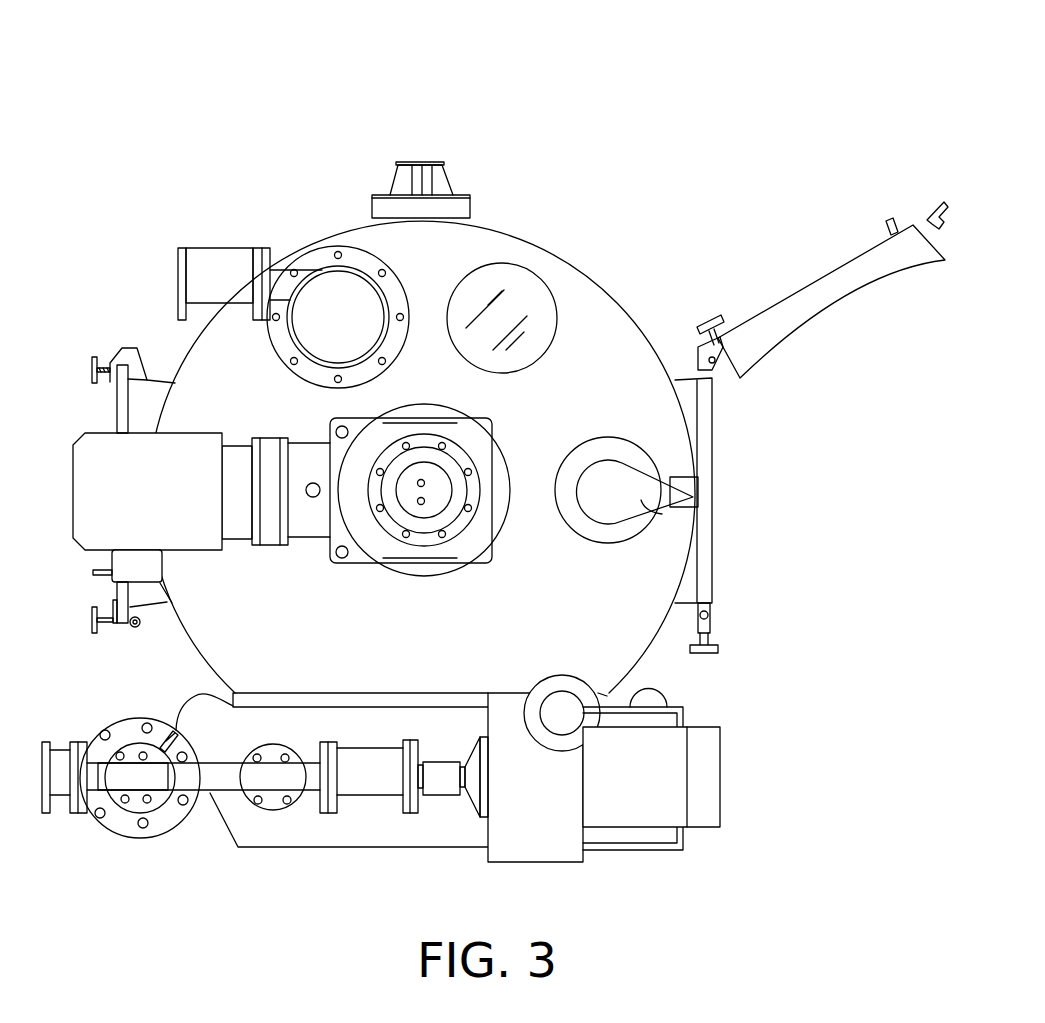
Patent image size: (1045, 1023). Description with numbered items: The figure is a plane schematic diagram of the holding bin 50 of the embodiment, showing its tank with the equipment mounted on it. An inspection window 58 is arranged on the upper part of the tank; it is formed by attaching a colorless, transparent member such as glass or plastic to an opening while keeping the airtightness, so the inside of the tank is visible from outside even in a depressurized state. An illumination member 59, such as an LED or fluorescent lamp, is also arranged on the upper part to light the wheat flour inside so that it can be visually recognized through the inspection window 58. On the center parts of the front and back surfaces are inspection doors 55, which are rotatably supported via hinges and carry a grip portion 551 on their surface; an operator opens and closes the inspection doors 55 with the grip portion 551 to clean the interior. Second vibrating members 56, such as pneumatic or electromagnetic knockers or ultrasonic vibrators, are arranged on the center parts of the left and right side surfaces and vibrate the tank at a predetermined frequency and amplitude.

The holding bin 50 is at (381, 435).
The inspection door 55 is at (117, 420).
The grip portion 551 is at (887, 222).
The second vibrating member 56 is at (438, 167).
The inspection window 58 is at (530, 270).
The illumination member 59 is at (662, 514).